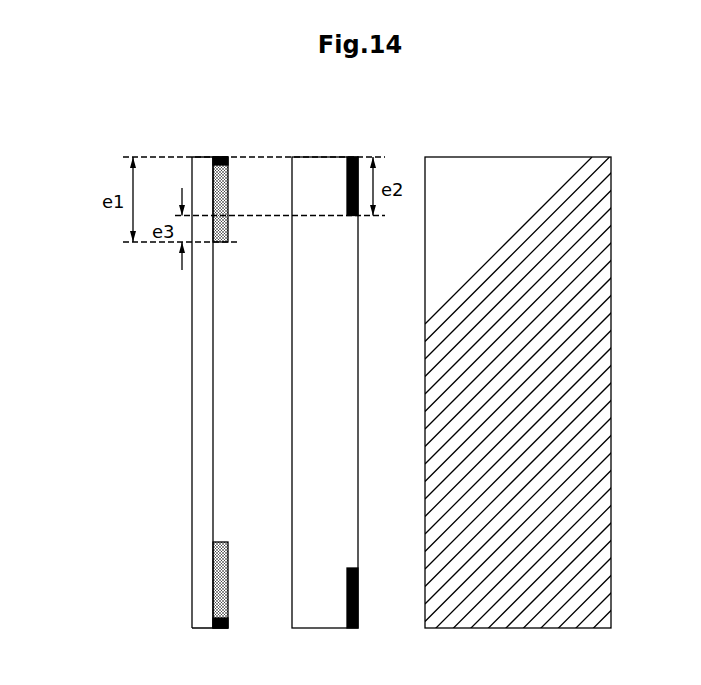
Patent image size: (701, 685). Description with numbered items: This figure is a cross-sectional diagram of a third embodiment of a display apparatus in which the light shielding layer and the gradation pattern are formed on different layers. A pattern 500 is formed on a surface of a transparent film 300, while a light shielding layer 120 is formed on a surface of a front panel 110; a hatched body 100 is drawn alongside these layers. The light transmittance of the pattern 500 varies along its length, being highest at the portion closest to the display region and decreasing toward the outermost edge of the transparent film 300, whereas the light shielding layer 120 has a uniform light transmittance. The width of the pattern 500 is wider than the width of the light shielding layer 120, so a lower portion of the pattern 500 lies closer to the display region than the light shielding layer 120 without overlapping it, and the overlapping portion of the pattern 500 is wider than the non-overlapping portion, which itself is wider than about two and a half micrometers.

The body / hatched member 100 is at (518, 170).
The front panel 110 is at (316, 162).
The light shielding layer 120 is at (350, 220).
The transparent film 300 is at (204, 162).
The pattern 500 is at (226, 178).